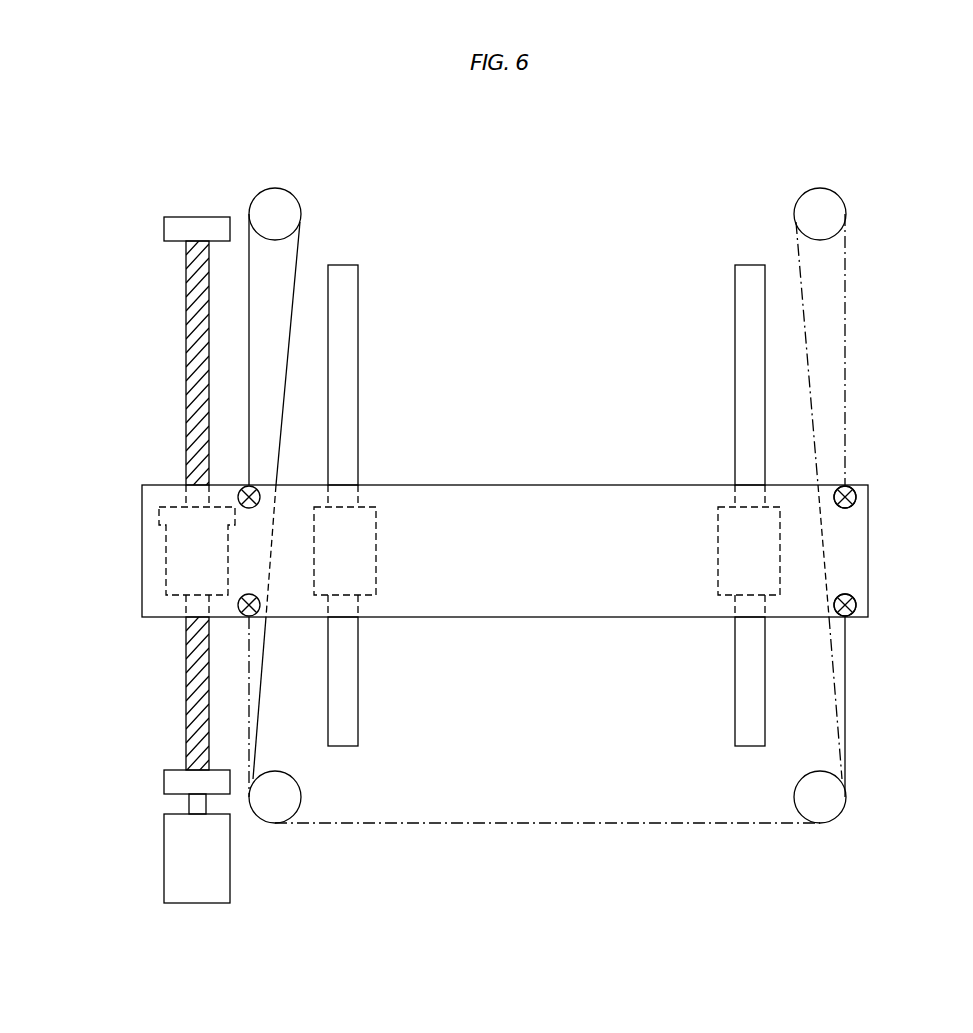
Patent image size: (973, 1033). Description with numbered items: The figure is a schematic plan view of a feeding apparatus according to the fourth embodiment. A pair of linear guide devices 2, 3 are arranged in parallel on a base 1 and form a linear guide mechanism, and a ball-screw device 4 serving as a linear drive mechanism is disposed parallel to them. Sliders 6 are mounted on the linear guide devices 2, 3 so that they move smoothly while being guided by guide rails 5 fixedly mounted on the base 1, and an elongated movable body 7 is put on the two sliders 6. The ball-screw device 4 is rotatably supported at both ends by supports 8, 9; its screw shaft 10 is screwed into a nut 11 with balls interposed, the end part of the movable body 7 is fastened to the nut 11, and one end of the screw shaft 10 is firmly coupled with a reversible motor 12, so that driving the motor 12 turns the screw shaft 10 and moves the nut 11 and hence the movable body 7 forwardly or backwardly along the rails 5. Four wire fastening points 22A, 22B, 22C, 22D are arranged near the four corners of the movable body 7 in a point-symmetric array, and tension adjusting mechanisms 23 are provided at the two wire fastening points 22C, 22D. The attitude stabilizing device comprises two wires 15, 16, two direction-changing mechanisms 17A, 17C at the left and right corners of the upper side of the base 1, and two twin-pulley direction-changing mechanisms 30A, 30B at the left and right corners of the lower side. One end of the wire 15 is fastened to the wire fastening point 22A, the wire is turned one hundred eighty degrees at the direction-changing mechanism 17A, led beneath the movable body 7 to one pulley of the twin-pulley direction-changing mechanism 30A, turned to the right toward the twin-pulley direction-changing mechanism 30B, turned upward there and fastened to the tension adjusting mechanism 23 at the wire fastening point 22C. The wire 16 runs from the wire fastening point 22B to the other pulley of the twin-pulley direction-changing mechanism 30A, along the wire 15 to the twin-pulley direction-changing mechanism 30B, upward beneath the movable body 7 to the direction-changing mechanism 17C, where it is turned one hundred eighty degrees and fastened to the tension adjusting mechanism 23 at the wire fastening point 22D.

The base 1 is at (566, 296).
The linear guide device 2 is at (368, 400).
The linear guide device 3 is at (728, 398).
The ball-screw device 4 is at (176, 628).
The guide rail 5 is at (358, 310).
The slider 6 is at (372, 485).
The movable body 7 is at (527, 598).
The support 8 is at (172, 228).
The support 9 is at (172, 782).
The screw shaft 10 is at (195, 342).
The nut 11 is at (178, 556).
The reversible motor 12 is at (168, 866).
The wire 15 is at (300, 241).
The wire 16 is at (797, 252).
The direction-changing mechanism 17A is at (288, 200).
The direction-changing mechanism 17C is at (833, 218).
The wire fastening point 22A is at (247, 487).
The wire fastening point 22B is at (247, 616).
The wire fastening point 22C is at (852, 617).
The wire fastening point 22D is at (852, 487).
The tension adjusting mechanism 23 is at (856, 492).
The twin-pulley direction-changing mechanism 30A is at (280, 806).
The twin-pulley direction-changing mechanism 30B is at (827, 806).